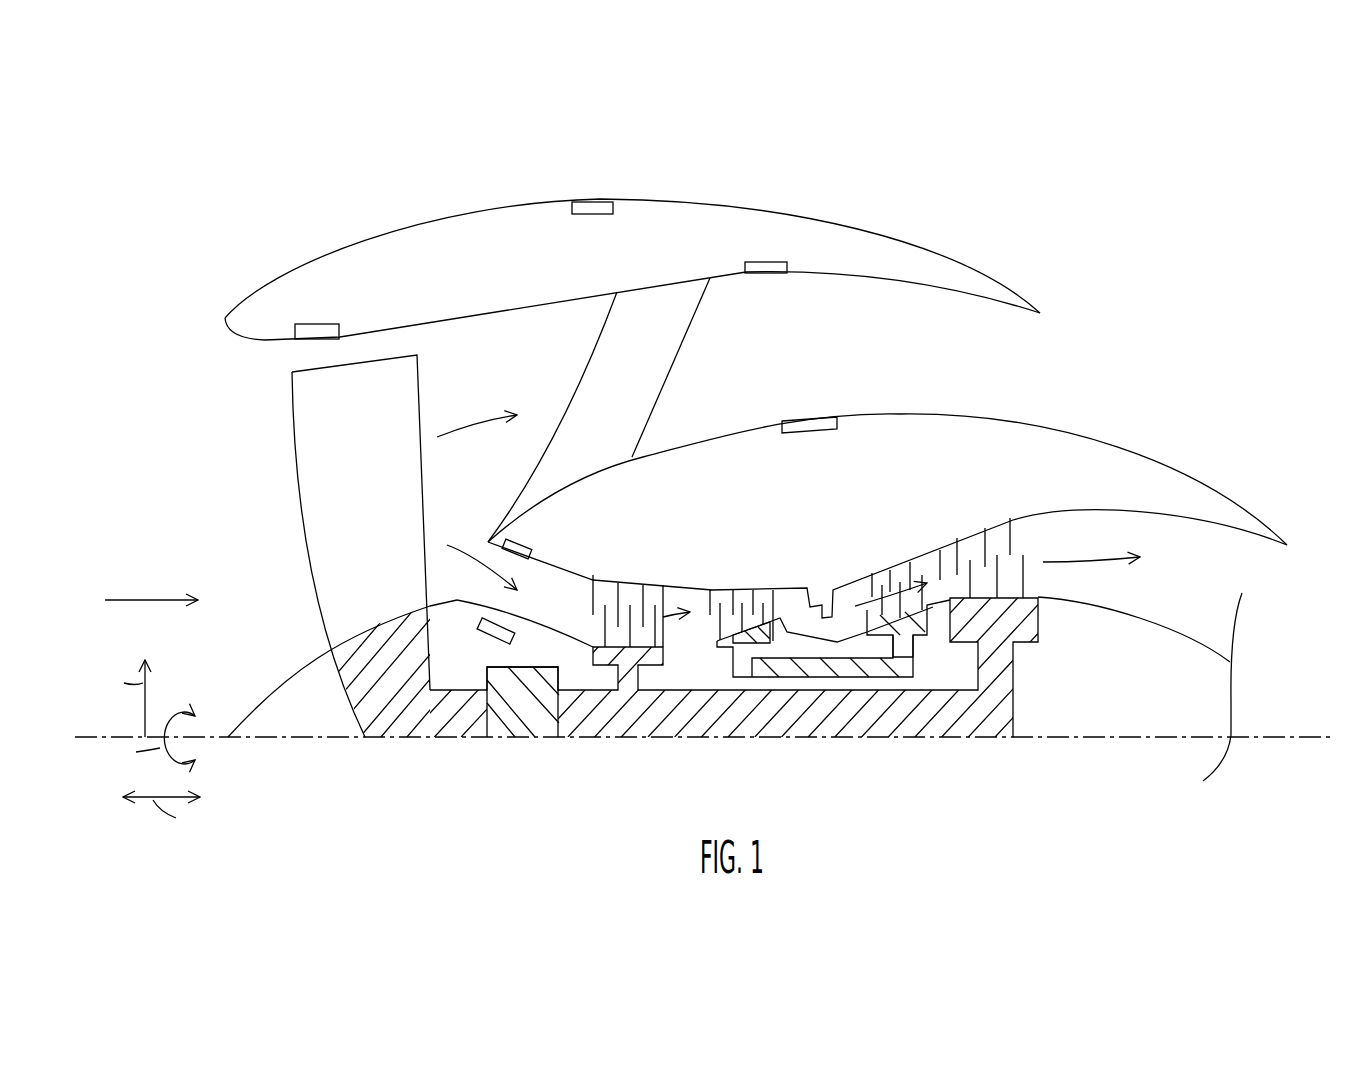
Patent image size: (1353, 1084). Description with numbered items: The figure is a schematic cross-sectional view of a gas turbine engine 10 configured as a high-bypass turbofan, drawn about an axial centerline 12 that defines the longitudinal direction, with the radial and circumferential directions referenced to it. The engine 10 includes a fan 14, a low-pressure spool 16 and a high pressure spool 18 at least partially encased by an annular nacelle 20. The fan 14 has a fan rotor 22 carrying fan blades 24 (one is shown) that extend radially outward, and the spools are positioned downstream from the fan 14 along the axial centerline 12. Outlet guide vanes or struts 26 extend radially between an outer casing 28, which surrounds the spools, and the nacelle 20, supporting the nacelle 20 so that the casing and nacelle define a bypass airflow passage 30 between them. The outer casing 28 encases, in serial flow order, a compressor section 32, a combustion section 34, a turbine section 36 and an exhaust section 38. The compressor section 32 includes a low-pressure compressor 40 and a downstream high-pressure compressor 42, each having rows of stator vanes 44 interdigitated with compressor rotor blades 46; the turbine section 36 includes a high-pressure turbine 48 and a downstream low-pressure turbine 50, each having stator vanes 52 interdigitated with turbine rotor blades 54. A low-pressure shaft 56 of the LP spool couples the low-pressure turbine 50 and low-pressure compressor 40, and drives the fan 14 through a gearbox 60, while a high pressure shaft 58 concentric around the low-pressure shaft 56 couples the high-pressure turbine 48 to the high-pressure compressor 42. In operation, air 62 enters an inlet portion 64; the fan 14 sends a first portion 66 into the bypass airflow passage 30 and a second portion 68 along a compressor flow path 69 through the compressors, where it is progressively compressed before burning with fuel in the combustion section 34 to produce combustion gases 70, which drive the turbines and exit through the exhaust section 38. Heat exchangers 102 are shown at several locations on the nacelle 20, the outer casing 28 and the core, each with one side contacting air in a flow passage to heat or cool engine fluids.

The gas turbine engine 10 is at (258, 160).
The axial centerline 12 is at (1117, 738).
The fan 14 is at (270, 443).
The low-pressure spool 16 is at (618, 763).
The high pressure spool 18 is at (897, 697).
The nacelle 20 is at (342, 244).
The fan rotor 22 is at (290, 680).
The fan blades 24 is at (305, 546).
The outlet guide vanes or struts 26 is at (592, 355).
The outer casing 28 is at (955, 418).
The bypass airflow passage 30 is at (785, 366).
The compressor section 32 is at (688, 556).
The combustion section 34 is at (810, 556).
The turbine section 36 is at (917, 523).
The exhaust section 38 is at (1246, 576).
The low-pressure compressor 40 is at (605, 556).
The high-pressure compressor 42 is at (737, 557).
The stator vanes 44 is at (590, 597).
The compressor rotor blades 46 is at (660, 595).
The high-pressure turbine 48 is at (878, 550).
The low-pressure turbine 50 is at (997, 500).
The stator vanes 52 is at (870, 587).
The turbine rotor blades 54 is at (930, 585).
The low-pressure shaft 56 is at (700, 722).
The high pressure shaft 58 is at (877, 690).
The gearbox 60 is at (530, 722).
The air 62 is at (128, 602).
The inlet portion 64 is at (220, 352).
The first portion of the air 66 is at (488, 422).
The second portion of the air 68 is at (462, 562).
The compressor flow path 69 is at (556, 619).
The combustion gases 70 is at (930, 580).
The heat exchanger 102 is at (526, 389).